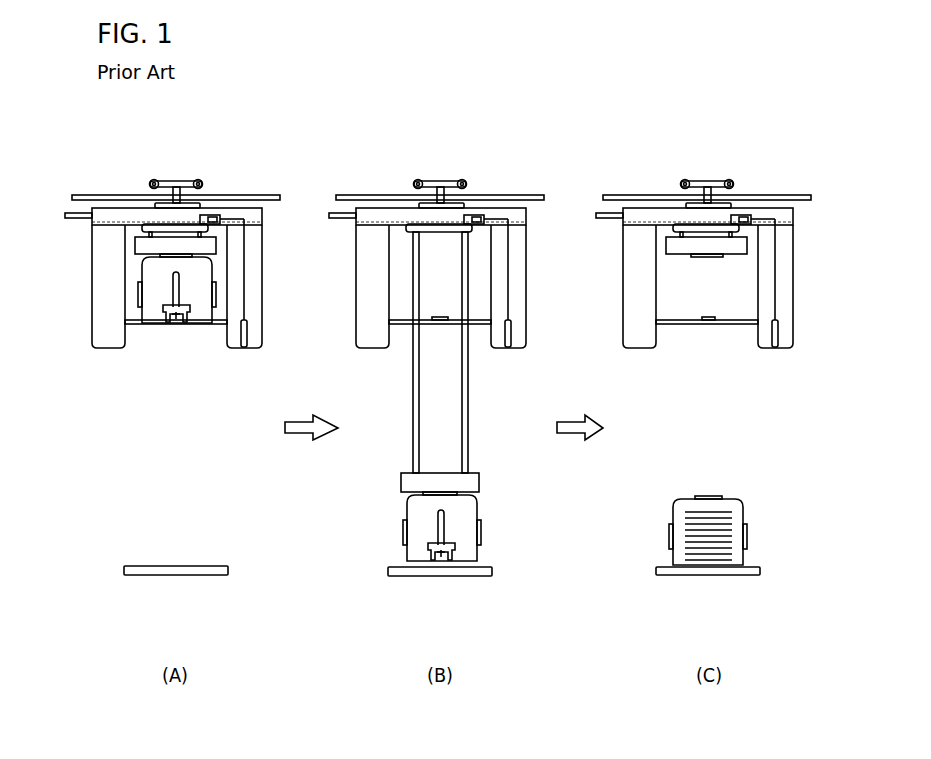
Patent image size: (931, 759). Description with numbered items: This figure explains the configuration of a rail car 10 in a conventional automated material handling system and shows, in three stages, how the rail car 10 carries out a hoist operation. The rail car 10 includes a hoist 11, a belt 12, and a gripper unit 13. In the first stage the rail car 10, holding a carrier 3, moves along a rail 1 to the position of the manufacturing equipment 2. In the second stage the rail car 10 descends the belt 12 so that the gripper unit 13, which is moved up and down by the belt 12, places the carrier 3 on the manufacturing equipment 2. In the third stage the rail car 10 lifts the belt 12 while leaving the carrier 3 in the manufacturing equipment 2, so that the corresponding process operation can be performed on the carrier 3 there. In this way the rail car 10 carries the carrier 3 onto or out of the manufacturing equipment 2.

The rail 1 is at (167, 176).
The manufacturing equipment 2 is at (207, 575).
The carrier 3 is at (152, 319).
The rail car 10 is at (75, 268).
The hoist 11 is at (225, 235).
The belt 12 is at (413, 387).
The gripper unit 13 is at (401, 484).